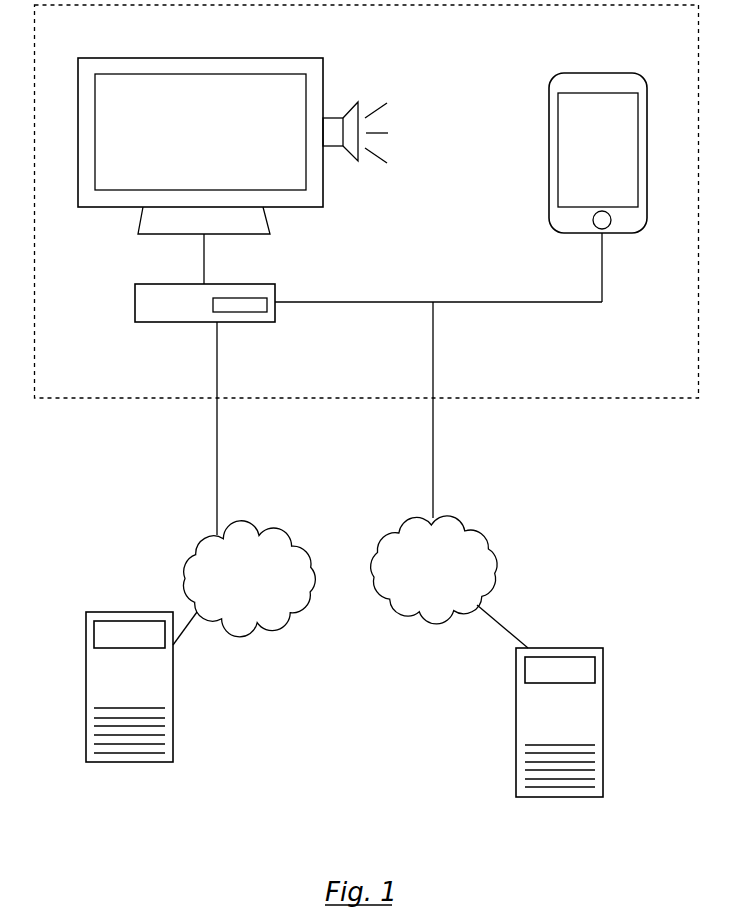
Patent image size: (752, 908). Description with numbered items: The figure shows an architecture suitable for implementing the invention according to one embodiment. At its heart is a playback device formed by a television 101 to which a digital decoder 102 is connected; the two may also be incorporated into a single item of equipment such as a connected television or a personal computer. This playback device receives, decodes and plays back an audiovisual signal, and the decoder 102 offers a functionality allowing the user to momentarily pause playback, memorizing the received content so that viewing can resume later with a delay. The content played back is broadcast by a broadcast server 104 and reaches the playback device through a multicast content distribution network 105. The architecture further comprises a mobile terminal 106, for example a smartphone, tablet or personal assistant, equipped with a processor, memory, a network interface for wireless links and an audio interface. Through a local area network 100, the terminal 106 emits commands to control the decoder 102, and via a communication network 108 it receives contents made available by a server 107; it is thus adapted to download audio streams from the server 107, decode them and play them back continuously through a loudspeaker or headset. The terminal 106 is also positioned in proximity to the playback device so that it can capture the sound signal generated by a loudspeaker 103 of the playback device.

The local area network 100 is at (140, 398).
The television 101 is at (278, 58).
The digital decoder 102 is at (267, 284).
The loudspeaker 103 is at (358, 161).
The broadcast server 104 is at (110, 762).
The multicast content distribution network 105 is at (198, 535).
The mobile terminal 106 is at (549, 102).
The server 107 is at (522, 797).
The communication network 108 is at (483, 518).